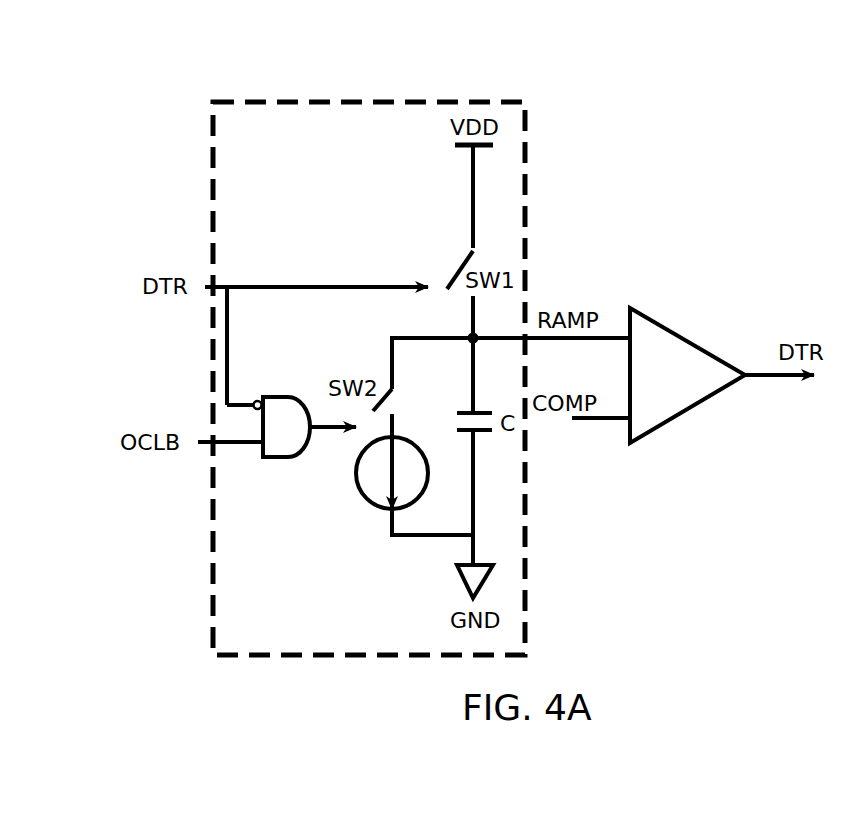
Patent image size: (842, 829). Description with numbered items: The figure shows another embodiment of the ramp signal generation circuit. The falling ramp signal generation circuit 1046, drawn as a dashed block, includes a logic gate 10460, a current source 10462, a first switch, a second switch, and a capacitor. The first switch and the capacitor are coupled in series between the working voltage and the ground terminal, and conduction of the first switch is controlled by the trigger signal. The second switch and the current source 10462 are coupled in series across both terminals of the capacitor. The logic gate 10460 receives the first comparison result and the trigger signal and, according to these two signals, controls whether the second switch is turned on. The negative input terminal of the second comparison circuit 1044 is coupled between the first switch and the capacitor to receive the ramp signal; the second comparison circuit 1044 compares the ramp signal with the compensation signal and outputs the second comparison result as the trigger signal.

The falling ramp signal generation circuit 1046 is at (369, 378).
The logic gate 10460 is at (299, 409).
The current source 10462 is at (362, 475).
The second comparison circuit 1044 is at (722, 375).